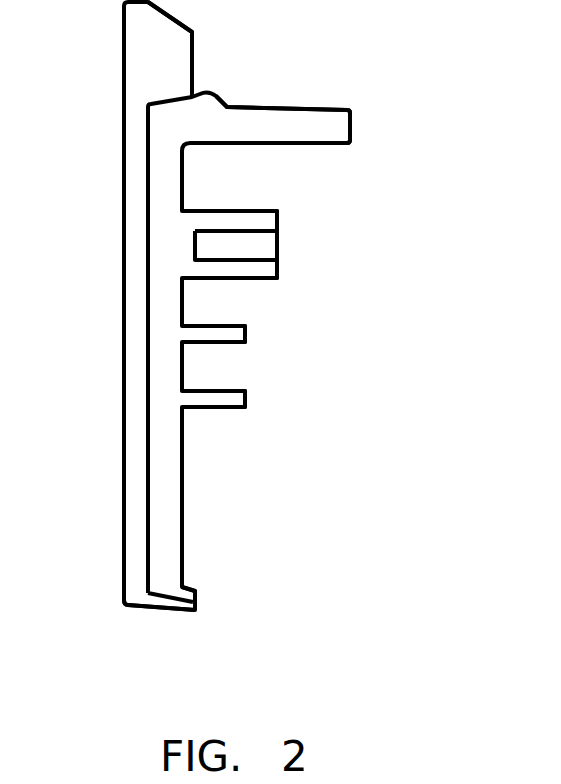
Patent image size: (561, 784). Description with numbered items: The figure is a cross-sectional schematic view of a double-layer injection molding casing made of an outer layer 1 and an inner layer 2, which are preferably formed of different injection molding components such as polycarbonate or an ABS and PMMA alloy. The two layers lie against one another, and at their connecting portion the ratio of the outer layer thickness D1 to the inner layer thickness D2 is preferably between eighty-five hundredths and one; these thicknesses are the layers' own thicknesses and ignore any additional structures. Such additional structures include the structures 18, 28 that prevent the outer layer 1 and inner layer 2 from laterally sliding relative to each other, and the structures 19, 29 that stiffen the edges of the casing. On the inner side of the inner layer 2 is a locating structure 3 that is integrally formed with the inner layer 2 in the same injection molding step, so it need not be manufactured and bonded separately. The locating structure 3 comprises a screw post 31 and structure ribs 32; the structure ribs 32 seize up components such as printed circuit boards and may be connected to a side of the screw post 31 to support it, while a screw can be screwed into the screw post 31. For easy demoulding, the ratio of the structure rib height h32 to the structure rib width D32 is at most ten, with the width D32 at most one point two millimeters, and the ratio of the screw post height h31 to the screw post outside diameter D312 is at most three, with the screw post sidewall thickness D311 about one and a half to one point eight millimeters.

The outer layer 1 is at (128, 315).
The inner layer 2 is at (170, 555).
The locating structure 3 is at (330, 293).
The structure for preventing lateral sliding 18 is at (162, 612).
The structure for stiffening edges 19 is at (173, 50).
The structure for preventing lateral sliding 28 is at (198, 603).
The structure for stiffening edges 29 is at (261, 127).
The screw post 31 is at (255, 243).
The structure rib 32 is at (238, 334).
The outer layer thickness D1 is at (159, 533).
The inner layer thickness D2 is at (133, 492).
The screw post sidewall thickness D311 is at (236, 239).
The screw post outside diameter D312 is at (187, 270).
The structure rib width D32 is at (220, 415).
The screw post height h31 is at (277, 303).
The structure rib height h32 is at (245, 446).